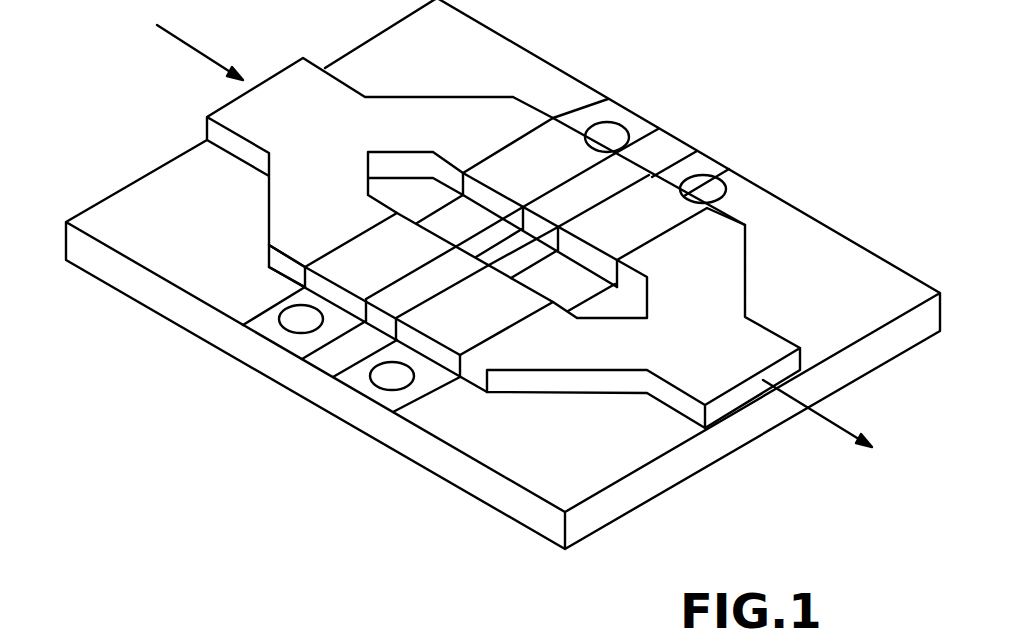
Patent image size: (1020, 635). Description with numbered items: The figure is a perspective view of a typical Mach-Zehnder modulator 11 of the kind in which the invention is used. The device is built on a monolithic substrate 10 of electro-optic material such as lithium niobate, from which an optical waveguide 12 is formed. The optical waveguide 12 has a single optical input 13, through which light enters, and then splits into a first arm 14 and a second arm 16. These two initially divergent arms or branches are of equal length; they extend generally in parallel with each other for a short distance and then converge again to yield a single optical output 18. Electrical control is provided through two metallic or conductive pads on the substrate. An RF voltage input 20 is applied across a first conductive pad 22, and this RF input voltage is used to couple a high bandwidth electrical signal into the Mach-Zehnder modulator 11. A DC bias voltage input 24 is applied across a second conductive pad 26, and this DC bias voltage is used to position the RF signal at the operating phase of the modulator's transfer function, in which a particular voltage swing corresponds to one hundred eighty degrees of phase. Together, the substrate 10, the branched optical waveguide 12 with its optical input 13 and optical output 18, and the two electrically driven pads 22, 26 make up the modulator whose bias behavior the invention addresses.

The monolithic substrate 10 is at (632, 497).
The Mach-Zehnder modulator 11 is at (830, 176).
The optical waveguide 12 is at (163, 193).
The optical input 13 is at (188, 26).
The first arm 14 is at (613, 170).
The second arm 16 is at (540, 352).
The optical output 18 is at (835, 418).
The RF voltage input 20 is at (296, 321).
The first conductive pad 22 is at (553, 147).
The DC bias voltage input 24 is at (388, 377).
The second conductive pad 26 is at (643, 200).